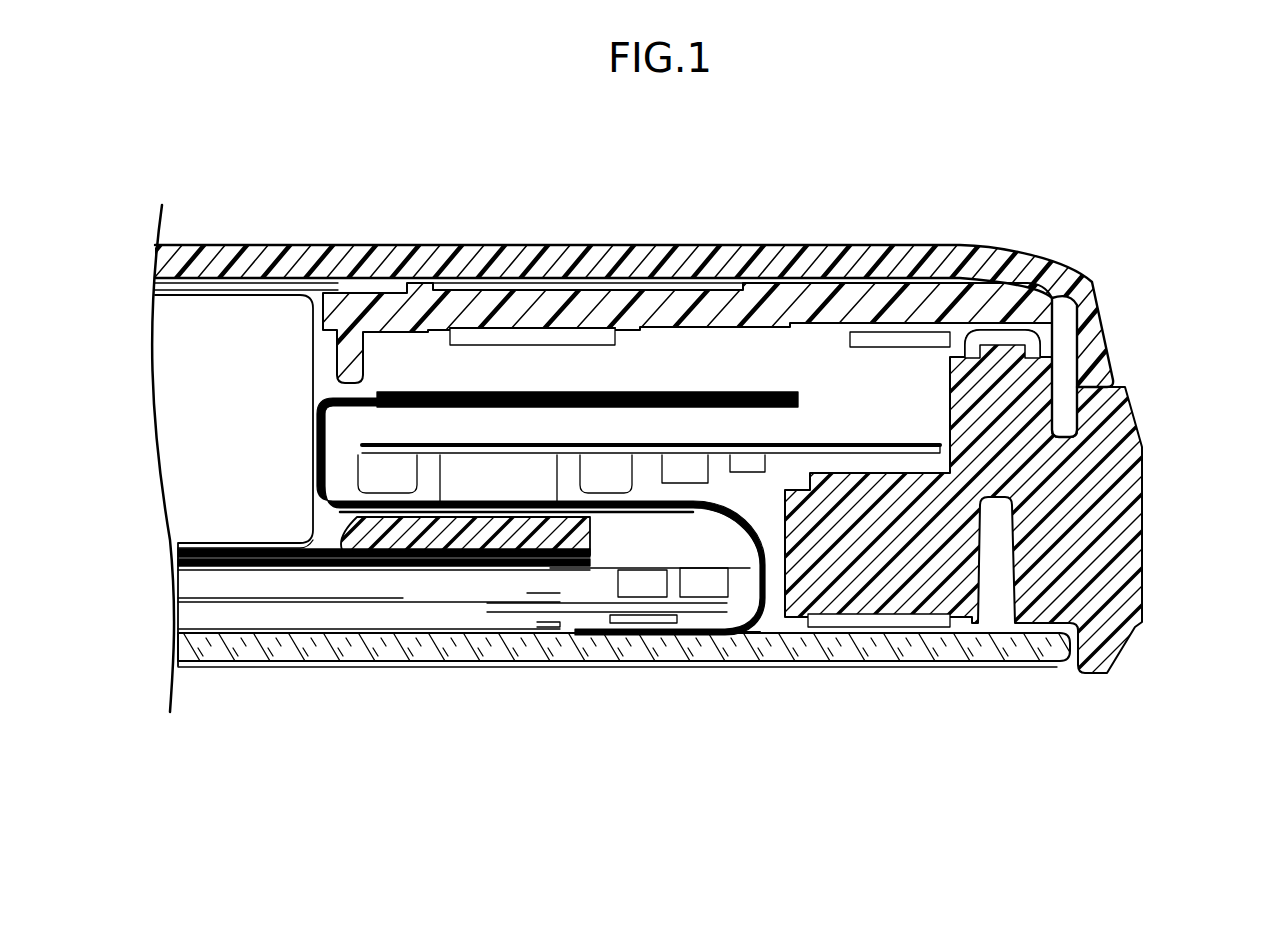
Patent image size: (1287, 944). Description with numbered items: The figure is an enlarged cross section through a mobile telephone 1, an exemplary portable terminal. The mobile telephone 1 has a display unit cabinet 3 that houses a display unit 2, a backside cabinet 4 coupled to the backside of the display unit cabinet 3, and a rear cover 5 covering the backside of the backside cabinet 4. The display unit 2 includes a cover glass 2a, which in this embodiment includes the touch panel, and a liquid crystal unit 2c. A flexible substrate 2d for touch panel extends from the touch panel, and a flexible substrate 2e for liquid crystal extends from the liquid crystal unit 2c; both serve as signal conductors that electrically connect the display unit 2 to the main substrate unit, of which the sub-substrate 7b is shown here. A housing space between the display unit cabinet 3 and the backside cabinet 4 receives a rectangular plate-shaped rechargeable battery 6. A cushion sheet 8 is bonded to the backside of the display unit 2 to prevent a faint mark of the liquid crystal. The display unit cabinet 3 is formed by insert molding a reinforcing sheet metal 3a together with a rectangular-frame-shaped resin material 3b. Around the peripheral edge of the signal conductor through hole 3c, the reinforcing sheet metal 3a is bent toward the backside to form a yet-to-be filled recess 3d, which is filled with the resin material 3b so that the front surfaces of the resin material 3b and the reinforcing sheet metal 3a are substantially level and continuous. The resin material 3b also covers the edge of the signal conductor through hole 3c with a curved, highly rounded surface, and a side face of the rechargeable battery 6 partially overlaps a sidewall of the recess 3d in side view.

The mobile telephone 1 is at (1153, 243).
The display unit 2 is at (626, 692).
The cover glass 2a is at (540, 662).
The liquid crystal unit 2c is at (347, 615).
The flexible substrate for touch panel 2d is at (757, 623).
The flexible substrate for liquid crystal 2e is at (700, 522).
The display unit cabinet 3 is at (1133, 637).
The reinforcing sheet metal 3a is at (337, 525).
The resin material 3b is at (478, 570).
The signal conductor through hole 3c is at (590, 502).
The yet-to-be filled recess 3d is at (425, 570).
The backside cabinet 4 is at (888, 295).
The rear cover 5 is at (710, 255).
The rechargeable battery 6 is at (190, 338).
The sub-substrate 7b is at (838, 440).
The cushion sheet 8 is at (253, 568).